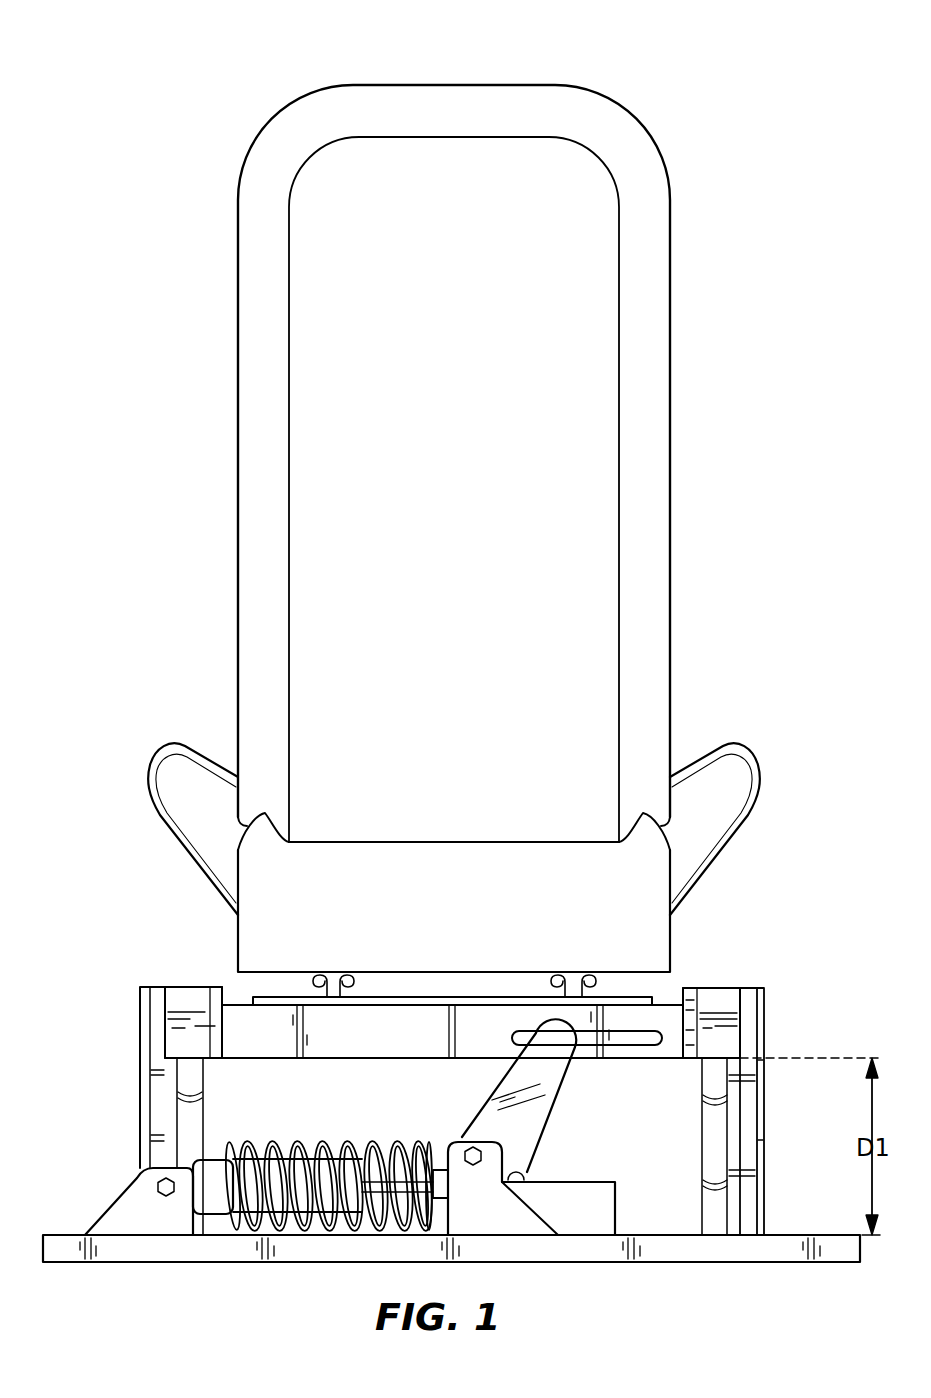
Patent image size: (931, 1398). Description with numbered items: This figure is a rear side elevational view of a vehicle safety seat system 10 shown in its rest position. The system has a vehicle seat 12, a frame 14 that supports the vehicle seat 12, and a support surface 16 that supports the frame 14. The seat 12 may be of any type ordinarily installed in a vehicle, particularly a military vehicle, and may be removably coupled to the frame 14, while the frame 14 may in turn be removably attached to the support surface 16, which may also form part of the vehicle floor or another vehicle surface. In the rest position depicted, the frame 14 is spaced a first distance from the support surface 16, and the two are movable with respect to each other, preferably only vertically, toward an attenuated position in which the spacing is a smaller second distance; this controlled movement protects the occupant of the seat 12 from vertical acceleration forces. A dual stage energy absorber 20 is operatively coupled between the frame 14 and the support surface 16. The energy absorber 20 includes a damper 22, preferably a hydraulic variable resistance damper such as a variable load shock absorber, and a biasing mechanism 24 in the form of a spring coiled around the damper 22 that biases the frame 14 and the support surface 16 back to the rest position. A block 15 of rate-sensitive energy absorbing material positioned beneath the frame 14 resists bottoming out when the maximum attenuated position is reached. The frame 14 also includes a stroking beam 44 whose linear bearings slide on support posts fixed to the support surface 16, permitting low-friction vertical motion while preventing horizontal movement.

The vehicle safety seat system 10 is at (680, 46).
The vehicle seat 12 is at (488, 86).
The frame 14 is at (672, 982).
The block 15 is at (565, 1180).
The support surface 16 is at (788, 1233).
The dual stage energy absorber 20 is at (249, 1133).
The damper 22 is at (248, 1227).
The biasing mechanism 24 is at (347, 1147).
The stroking beam 44 is at (627, 1053).